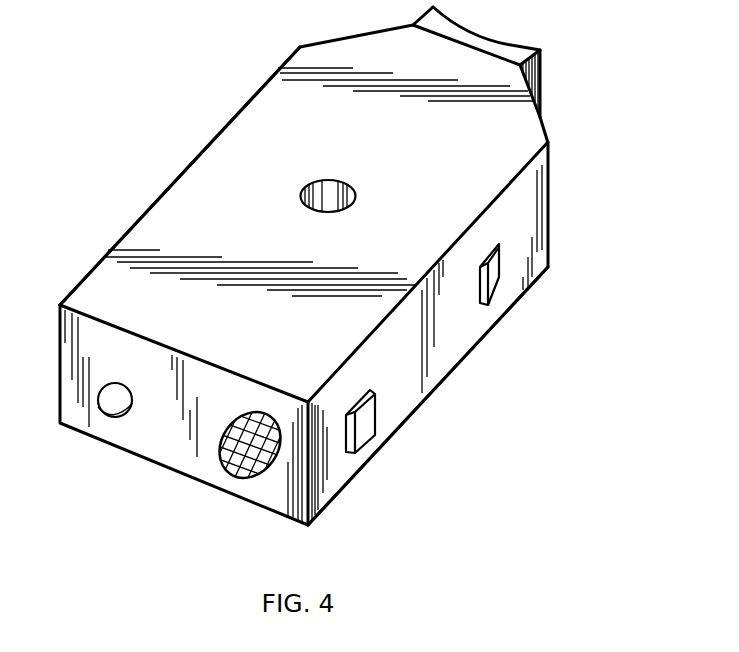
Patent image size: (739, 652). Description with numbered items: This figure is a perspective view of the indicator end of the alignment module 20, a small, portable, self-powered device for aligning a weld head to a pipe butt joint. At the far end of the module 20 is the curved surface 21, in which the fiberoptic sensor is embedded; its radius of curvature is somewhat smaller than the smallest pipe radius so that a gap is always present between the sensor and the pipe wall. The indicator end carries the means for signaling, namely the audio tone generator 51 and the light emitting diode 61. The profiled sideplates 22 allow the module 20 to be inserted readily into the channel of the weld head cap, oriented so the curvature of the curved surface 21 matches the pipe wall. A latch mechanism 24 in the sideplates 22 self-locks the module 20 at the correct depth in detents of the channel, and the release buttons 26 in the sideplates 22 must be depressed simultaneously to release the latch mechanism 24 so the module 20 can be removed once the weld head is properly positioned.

The alignment module 20 is at (79, 128).
The curved surface 21 is at (510, 47).
The sideplates 22 is at (133, 223).
The latch mechanism 24 is at (493, 293).
The release buttons 26 is at (367, 445).
The audio tone generator 51 is at (232, 467).
The light emitting diode 61 is at (115, 417).